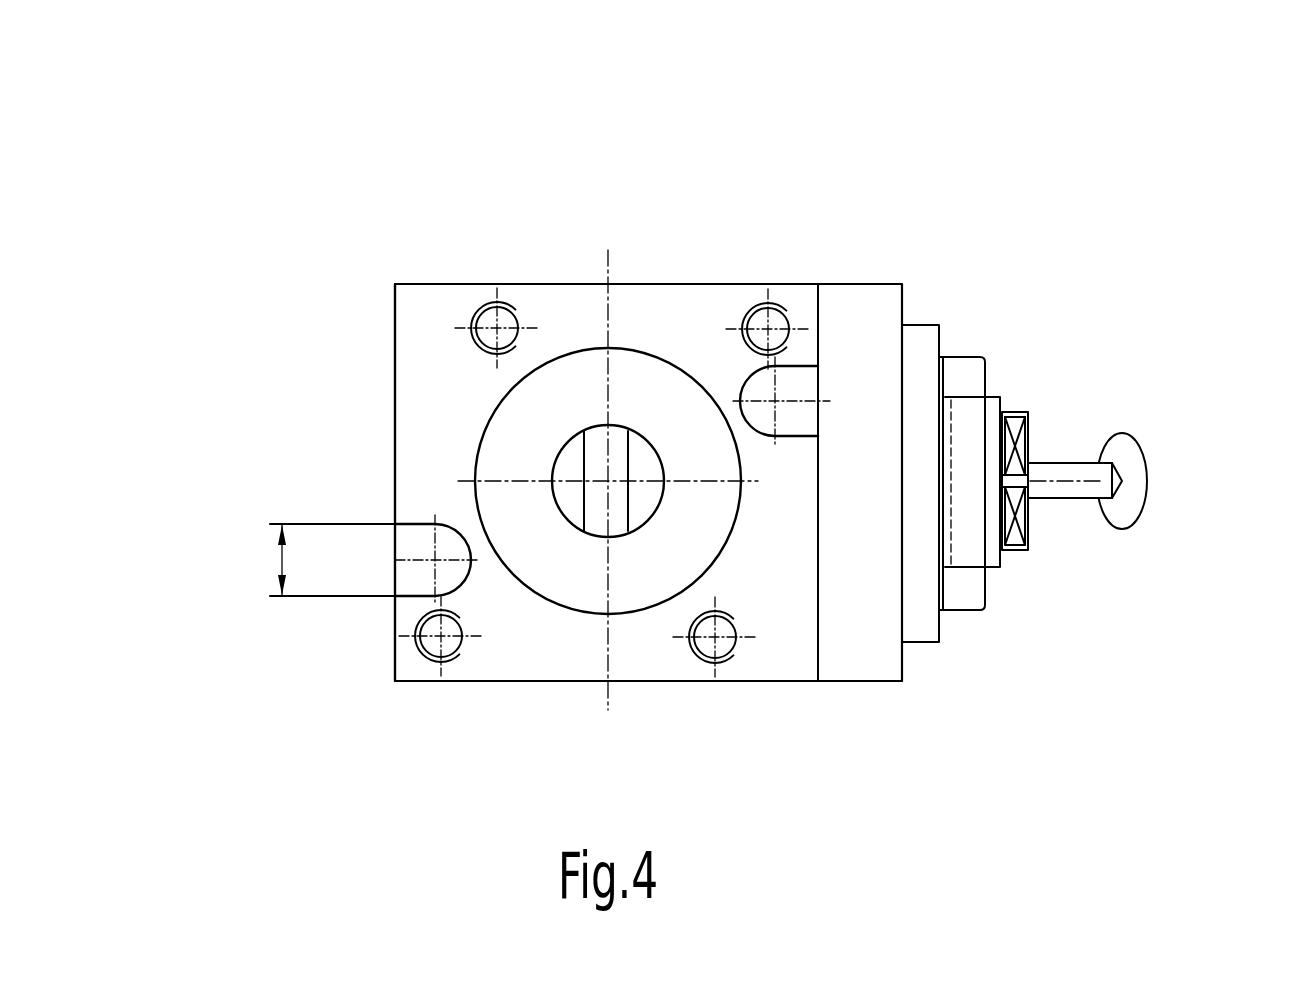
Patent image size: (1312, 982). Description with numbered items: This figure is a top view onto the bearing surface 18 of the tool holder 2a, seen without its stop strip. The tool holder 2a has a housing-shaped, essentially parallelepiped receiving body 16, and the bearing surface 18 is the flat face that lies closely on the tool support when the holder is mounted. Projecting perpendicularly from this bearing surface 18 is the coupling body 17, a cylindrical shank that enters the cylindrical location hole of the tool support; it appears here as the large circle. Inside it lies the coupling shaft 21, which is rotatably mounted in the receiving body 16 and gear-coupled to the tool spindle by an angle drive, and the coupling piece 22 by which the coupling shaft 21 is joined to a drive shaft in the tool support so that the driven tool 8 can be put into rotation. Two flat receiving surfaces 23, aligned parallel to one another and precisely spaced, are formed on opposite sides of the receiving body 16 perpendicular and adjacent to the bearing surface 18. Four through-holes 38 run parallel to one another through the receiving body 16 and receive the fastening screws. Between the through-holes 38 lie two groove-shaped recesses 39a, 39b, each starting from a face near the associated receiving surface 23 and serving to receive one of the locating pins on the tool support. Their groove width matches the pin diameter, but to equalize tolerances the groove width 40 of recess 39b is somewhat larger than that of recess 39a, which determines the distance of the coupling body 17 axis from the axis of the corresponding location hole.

The tool holder 2a is at (534, 264).
The bearing surface 18 is at (643, 308).
The receiving body 16 is at (758, 684).
The receiving surfaces 23 is at (393, 496).
The coupling body 17 is at (560, 568).
The coupling shaft 21 is at (570, 470).
The coupling piece 22 is at (608, 495).
The through-holes 38 is at (780, 303).
The groove-shaped recess 39a is at (793, 382).
The groove-shaped recess 39b is at (415, 577).
The groove width 40 is at (282, 560).
The tool 8 is at (1052, 477).